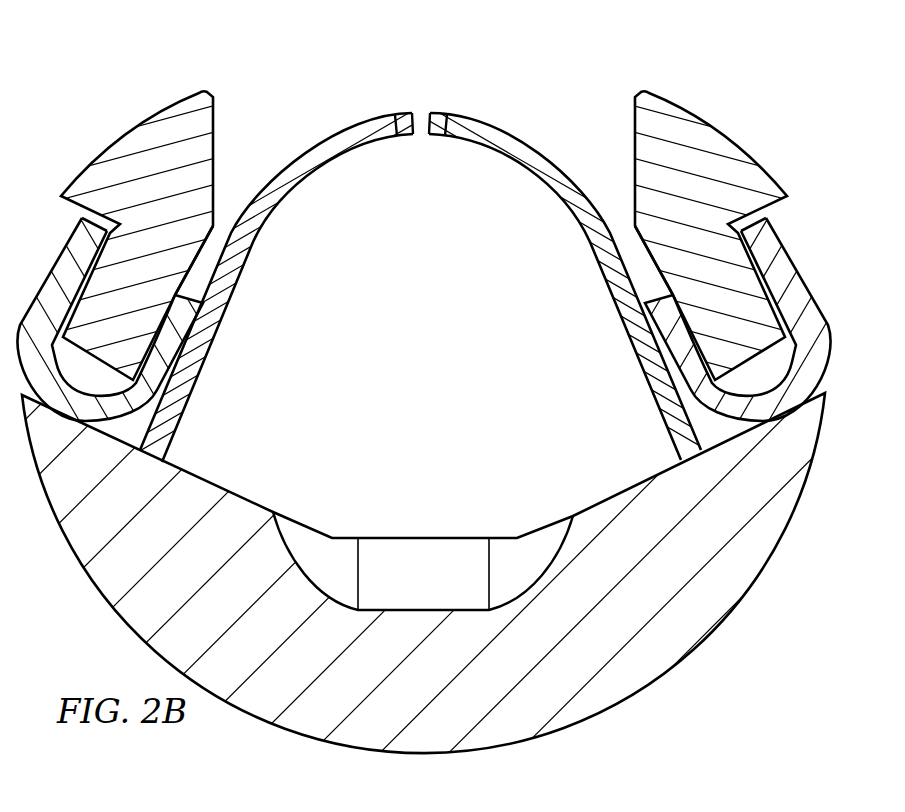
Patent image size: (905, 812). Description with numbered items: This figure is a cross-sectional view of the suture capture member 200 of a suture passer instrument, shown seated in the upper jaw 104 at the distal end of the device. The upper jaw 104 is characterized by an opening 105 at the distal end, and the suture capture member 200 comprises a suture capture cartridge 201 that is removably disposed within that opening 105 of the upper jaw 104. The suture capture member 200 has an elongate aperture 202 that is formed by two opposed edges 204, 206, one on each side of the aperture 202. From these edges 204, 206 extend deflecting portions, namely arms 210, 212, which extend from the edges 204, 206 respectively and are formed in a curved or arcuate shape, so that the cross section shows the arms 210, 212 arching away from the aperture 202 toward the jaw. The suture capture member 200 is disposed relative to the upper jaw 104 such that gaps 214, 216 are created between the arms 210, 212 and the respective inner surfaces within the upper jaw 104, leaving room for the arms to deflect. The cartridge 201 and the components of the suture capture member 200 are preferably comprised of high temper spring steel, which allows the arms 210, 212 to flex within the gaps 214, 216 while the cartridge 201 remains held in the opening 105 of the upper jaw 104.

The upper jaw member 104 is at (98, 590).
The opening 105 is at (424, 262).
The suture capture member 200 is at (106, 83).
The suture capture cartridge 201 is at (799, 272).
The elongate aperture 202 is at (419, 107).
The edge 204 is at (421, 128).
The edge 206 is at (431, 111).
The deflecting portion (arm) 210 is at (253, 258).
The deflecting portion (arm) 212 is at (604, 273).
The gap 214 is at (227, 224).
The gap 216 is at (621, 224).